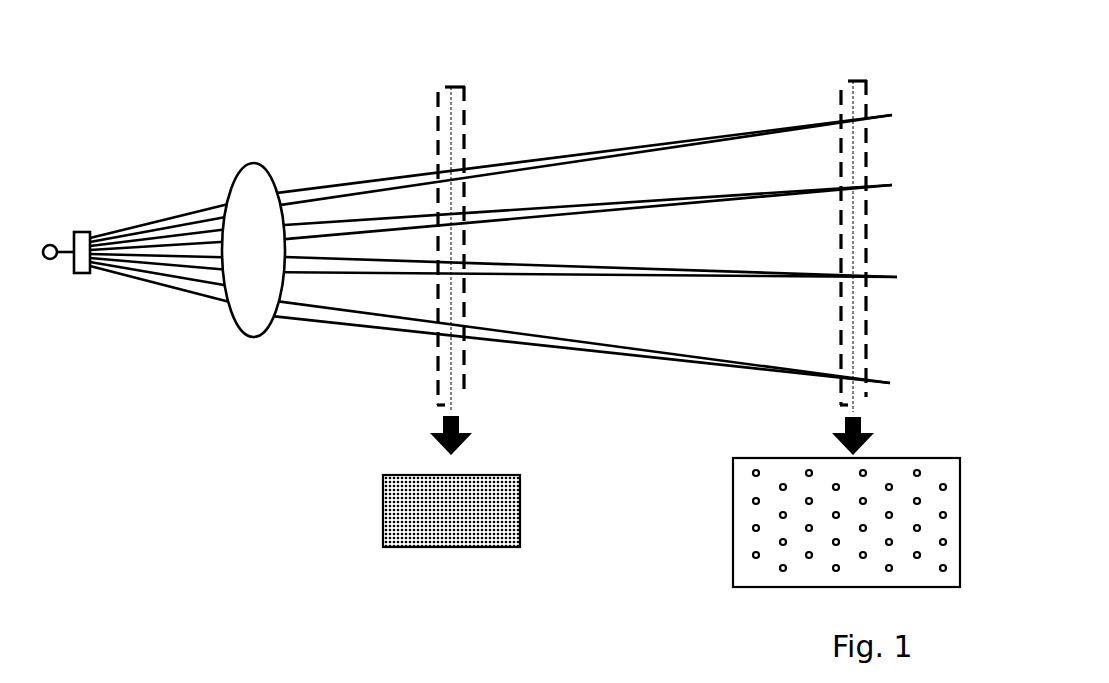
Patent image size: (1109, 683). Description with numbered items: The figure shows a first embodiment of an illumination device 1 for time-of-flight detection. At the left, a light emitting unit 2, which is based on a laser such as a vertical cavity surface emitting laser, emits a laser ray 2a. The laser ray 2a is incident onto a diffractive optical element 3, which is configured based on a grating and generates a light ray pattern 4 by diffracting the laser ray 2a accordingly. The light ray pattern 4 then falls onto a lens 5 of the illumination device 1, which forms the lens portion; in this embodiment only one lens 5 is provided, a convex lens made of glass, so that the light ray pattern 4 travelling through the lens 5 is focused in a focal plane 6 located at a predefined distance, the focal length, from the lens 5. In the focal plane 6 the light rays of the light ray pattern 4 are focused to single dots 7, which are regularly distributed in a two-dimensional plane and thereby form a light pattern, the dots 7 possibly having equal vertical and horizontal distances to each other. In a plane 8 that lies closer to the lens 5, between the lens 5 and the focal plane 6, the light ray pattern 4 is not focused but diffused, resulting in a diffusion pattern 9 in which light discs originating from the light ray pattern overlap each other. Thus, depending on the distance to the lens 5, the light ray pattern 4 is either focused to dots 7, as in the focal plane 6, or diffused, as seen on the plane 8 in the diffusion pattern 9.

The illumination device 1 is at (348, 58).
The light emitting unit 2 is at (53, 259).
The laser ray 2a is at (58, 250).
The diffractive optical element 3 is at (83, 275).
The light ray pattern 4 is at (160, 170).
The lens 5 is at (253, 163).
The focal plane 6 is at (851, 80).
The dots 7 is at (740, 530).
The plane 8 is at (450, 86).
The diffusion pattern 9 is at (403, 477).